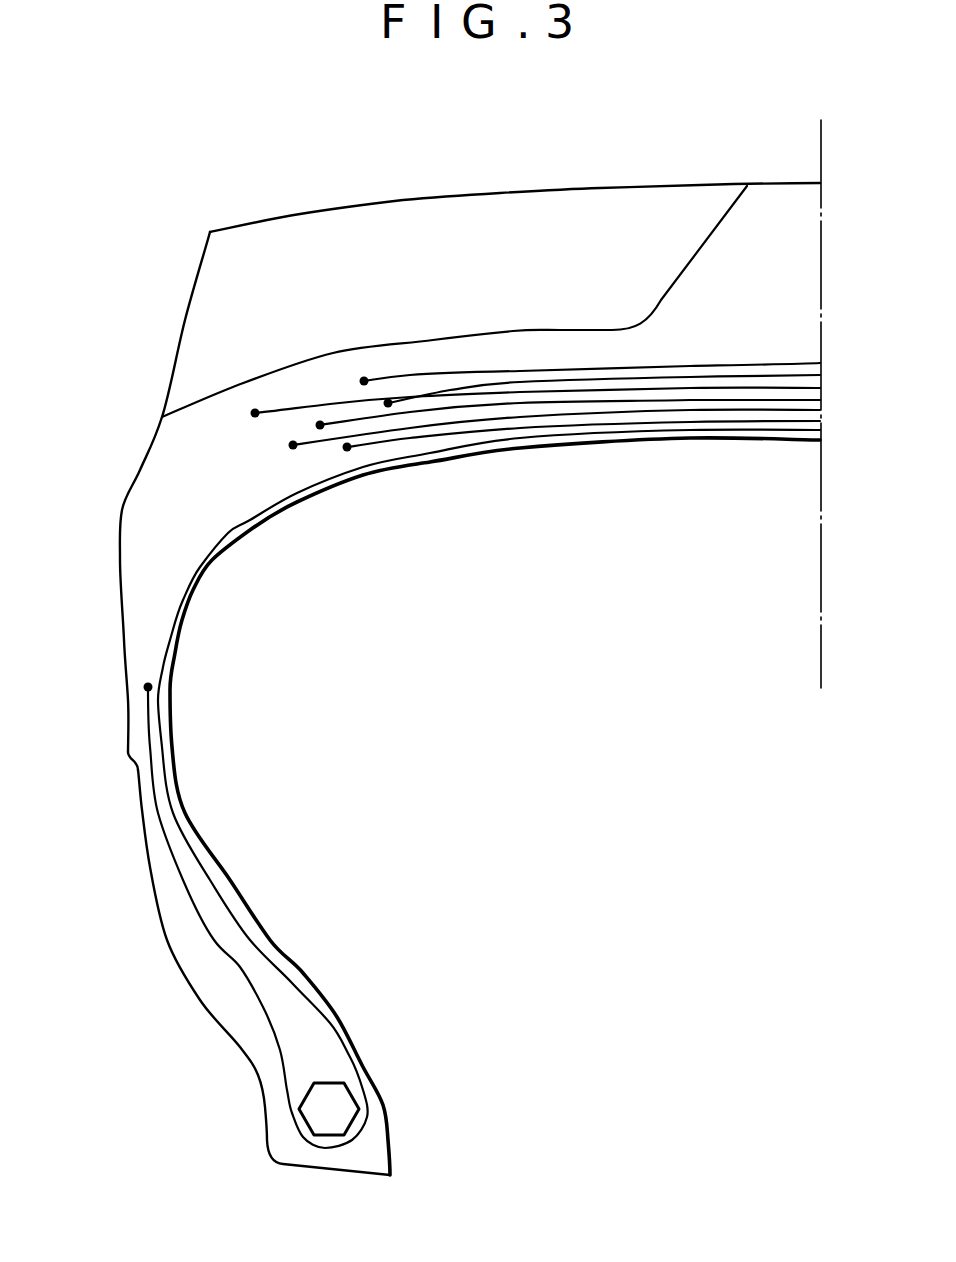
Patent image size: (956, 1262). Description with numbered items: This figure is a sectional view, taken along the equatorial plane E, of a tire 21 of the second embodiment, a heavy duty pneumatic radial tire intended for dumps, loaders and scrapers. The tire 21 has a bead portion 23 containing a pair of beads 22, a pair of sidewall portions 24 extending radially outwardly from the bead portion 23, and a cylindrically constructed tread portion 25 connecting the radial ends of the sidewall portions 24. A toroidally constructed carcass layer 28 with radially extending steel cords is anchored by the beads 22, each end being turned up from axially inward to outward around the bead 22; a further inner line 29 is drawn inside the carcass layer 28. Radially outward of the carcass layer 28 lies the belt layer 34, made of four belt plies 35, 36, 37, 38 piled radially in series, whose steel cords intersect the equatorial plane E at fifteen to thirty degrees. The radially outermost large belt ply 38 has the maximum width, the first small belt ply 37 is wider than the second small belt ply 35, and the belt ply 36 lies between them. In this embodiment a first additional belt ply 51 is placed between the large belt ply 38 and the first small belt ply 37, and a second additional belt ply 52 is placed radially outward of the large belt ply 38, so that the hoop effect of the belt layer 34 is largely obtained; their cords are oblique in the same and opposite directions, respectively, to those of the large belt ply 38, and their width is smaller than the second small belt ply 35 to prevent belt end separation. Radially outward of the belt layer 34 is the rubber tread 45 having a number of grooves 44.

The tire 21 is at (470, 433).
The beads 22 is at (345, 1110).
The bead portion 23 is at (234, 1055).
The sidewall portions 24 is at (127, 776).
The tread portion 25 is at (538, 180).
The carcass layer 28 is at (236, 538).
The inner liner 29 is at (173, 624).
The belt layer 34 is at (526, 394).
The second small belt ply 35 is at (481, 430).
The belt ply 36 is at (322, 441).
The first small belt ply 37 is at (395, 416).
The large belt ply 38 is at (330, 404).
The grooves 44 is at (624, 330).
The tread 45 is at (718, 225).
The first additional belt ply 51 is at (688, 388).
The second additional belt ply 52 is at (518, 371).
The equatorial plane E is at (821, 629).